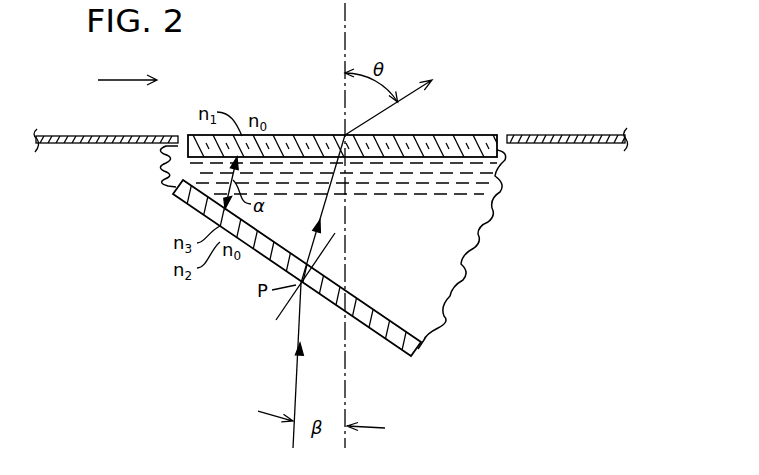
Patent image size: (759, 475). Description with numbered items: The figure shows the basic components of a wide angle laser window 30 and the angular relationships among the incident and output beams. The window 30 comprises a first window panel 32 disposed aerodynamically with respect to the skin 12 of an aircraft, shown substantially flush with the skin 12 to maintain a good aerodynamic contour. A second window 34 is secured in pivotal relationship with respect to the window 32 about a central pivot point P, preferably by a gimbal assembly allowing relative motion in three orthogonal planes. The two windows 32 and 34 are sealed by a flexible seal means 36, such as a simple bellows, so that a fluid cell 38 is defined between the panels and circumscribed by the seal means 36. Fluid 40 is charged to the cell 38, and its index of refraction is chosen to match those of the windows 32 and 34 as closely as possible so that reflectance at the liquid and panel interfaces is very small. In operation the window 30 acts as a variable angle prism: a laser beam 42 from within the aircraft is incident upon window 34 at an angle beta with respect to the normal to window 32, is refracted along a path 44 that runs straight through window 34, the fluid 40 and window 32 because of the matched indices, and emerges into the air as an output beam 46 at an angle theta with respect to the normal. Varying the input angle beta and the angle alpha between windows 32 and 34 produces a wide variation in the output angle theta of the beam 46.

The skin 12 is at (563, 135).
The wide angle laser window 30 is at (248, 82).
The first window panel 32 is at (312, 135).
The second window 34 is at (185, 202).
The flexible seal means 36 is at (503, 226).
The fluid cell 38 is at (443, 273).
The fluid 40 is at (407, 241).
The laser beam 42 is at (296, 388).
The path 44 is at (325, 210).
The output beam 46 is at (407, 96).